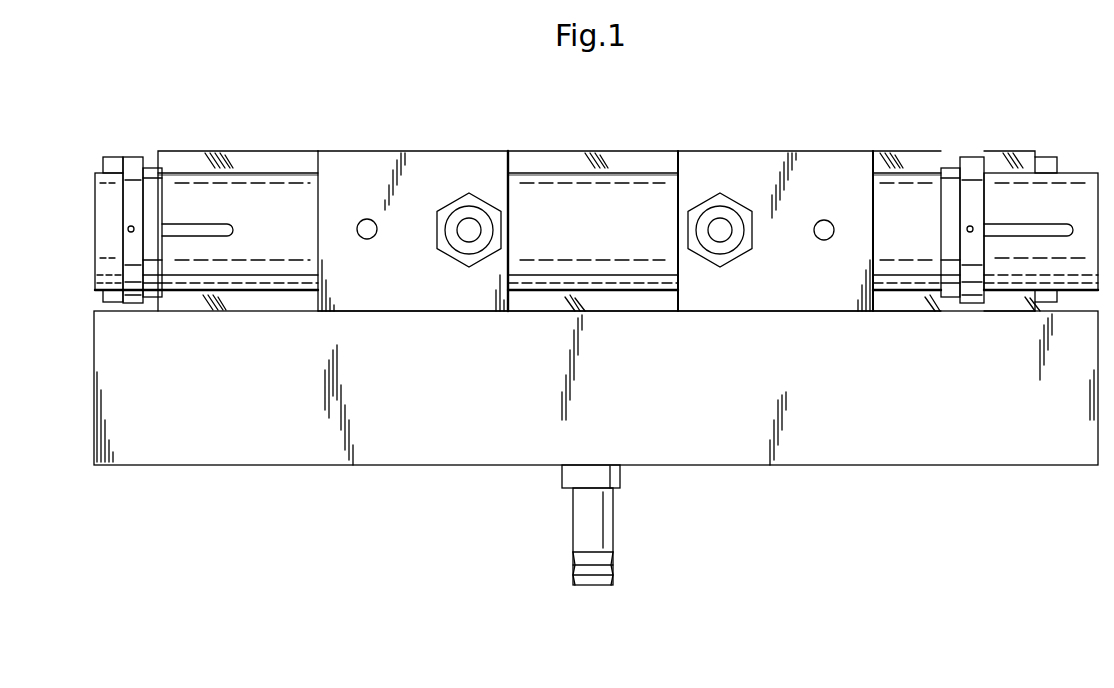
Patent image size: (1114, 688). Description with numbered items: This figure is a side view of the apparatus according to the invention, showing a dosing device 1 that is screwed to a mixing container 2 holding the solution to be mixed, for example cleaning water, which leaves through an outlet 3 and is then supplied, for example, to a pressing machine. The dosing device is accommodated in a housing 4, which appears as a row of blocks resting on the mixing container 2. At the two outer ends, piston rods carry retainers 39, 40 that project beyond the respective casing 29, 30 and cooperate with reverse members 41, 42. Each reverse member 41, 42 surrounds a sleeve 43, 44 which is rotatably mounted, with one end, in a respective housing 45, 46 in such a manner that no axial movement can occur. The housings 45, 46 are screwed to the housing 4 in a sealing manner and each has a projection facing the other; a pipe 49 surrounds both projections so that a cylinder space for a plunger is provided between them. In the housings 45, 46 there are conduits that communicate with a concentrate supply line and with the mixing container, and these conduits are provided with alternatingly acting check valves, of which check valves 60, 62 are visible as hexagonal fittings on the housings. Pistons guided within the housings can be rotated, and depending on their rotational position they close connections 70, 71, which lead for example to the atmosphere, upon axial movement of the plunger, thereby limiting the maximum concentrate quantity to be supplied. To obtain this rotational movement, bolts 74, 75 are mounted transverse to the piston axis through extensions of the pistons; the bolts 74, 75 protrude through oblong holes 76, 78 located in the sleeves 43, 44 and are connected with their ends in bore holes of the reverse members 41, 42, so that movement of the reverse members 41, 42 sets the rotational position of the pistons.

The dosing device 1 is at (633, 149).
The mixing container 2 is at (735, 458).
The outlet 3 is at (600, 533).
The housing 4 is at (550, 158).
The casing 29 is at (200, 158).
The casing 30 is at (910, 158).
The retainer 39 is at (111, 162).
The retainer 40 is at (1047, 162).
The reverse member 41 is at (135, 297).
The reverse member 42 is at (970, 294).
The sleeve 43 is at (288, 282).
The sleeve 44 is at (892, 282).
The housing 45 is at (385, 158).
The housing 46 is at (818, 162).
The pipe 49 is at (612, 282).
The check valve 60 is at (457, 242).
The check valve 62 is at (731, 246).
The connection 70 is at (363, 235).
The connection 71 is at (826, 236).
The bolt 74 is at (134, 226).
The bolt 75 is at (972, 228).
The oblong hole 76 is at (202, 233).
The oblong hole 78 is at (1033, 233).